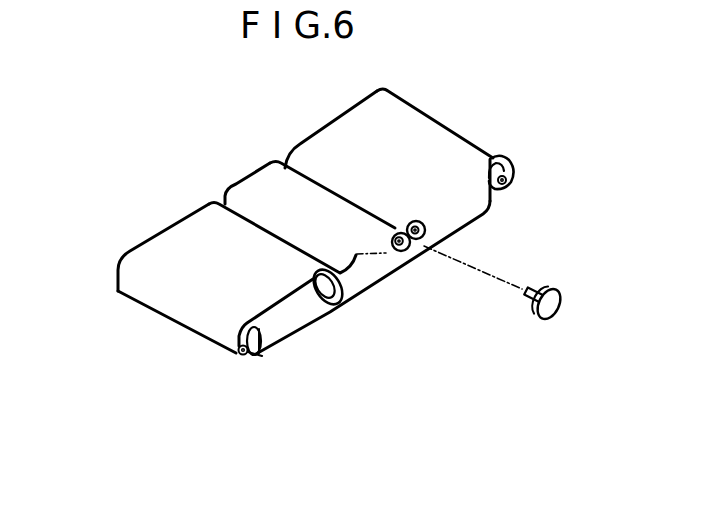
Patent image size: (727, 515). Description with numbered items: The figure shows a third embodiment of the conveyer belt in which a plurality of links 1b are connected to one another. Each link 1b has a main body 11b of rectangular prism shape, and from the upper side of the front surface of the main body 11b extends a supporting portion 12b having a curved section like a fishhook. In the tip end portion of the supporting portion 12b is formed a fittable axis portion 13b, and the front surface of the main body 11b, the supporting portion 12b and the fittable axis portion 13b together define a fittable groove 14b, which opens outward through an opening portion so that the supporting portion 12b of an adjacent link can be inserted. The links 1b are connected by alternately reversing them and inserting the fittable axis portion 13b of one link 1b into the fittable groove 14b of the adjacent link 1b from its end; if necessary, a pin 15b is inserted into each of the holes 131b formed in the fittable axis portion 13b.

The link 1b is at (361, 265).
The main body 11b is at (341, 125).
The supporting portion 12b is at (507, 163).
The hole 131b is at (510, 178).
The fittable axis portion 13b is at (498, 188).
The fittable groove 14b is at (489, 160).
The pin 15b is at (557, 300).